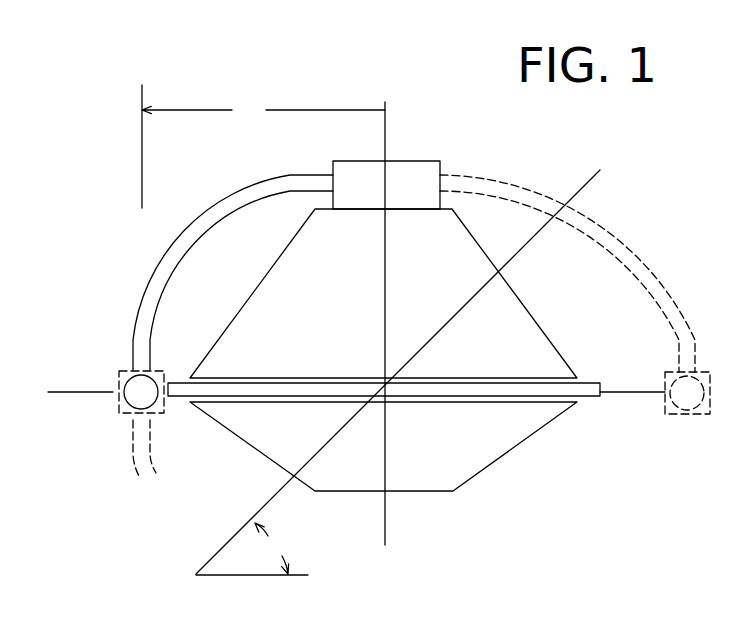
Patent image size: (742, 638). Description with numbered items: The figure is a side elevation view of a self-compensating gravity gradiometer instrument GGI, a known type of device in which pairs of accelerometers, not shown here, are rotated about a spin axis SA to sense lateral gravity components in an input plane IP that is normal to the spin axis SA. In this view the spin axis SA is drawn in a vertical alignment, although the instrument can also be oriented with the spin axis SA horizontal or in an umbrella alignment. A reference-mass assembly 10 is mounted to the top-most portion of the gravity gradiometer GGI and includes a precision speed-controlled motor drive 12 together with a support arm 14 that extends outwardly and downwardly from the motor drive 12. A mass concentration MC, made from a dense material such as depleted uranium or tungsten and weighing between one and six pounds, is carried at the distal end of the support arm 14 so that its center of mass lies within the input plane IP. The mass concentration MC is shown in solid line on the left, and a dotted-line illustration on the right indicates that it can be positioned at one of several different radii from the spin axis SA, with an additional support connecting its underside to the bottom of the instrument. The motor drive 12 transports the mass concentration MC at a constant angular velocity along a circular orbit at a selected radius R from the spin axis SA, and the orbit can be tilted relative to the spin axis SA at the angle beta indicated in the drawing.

The reference-mass assembly 10 is at (141, 224).
The precision speed-controlled motor drive 12 is at (420, 161).
The support arm 14 is at (148, 279).
The spin axis SA is at (387, 138).
The input plane IP is at (610, 395).
The gravity gradiometer instrument GGI is at (499, 478).
The mass concentration MC is at (117, 383).
The selected radius R is at (263, 146).
The angle beta is at (272, 548).